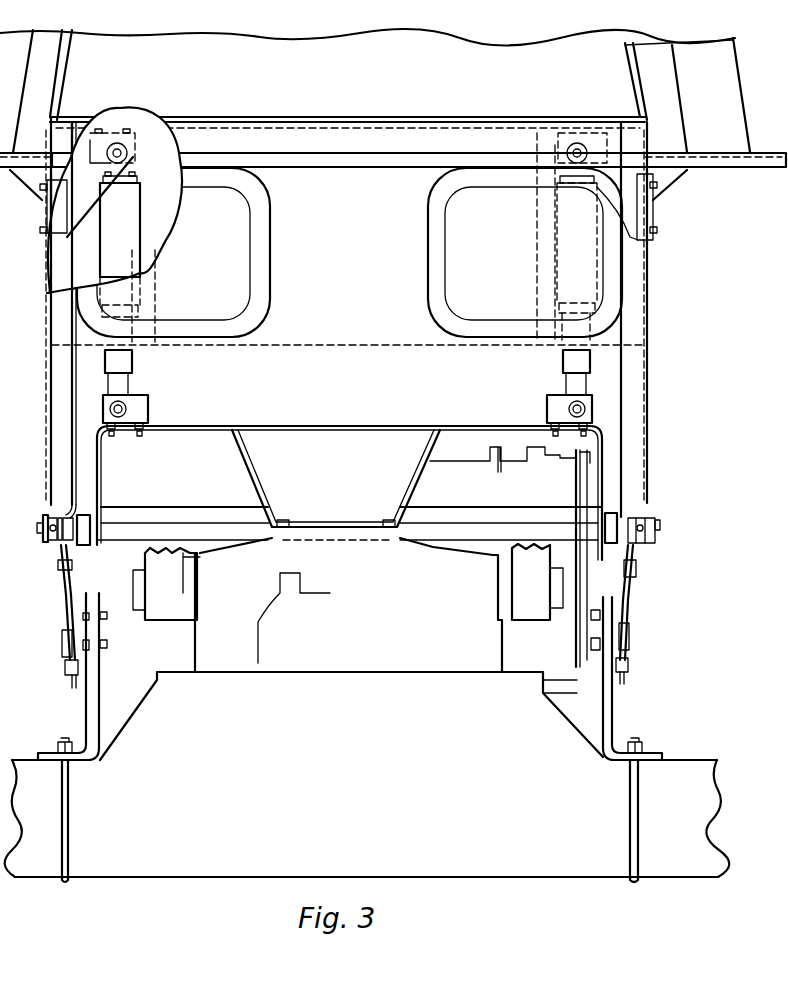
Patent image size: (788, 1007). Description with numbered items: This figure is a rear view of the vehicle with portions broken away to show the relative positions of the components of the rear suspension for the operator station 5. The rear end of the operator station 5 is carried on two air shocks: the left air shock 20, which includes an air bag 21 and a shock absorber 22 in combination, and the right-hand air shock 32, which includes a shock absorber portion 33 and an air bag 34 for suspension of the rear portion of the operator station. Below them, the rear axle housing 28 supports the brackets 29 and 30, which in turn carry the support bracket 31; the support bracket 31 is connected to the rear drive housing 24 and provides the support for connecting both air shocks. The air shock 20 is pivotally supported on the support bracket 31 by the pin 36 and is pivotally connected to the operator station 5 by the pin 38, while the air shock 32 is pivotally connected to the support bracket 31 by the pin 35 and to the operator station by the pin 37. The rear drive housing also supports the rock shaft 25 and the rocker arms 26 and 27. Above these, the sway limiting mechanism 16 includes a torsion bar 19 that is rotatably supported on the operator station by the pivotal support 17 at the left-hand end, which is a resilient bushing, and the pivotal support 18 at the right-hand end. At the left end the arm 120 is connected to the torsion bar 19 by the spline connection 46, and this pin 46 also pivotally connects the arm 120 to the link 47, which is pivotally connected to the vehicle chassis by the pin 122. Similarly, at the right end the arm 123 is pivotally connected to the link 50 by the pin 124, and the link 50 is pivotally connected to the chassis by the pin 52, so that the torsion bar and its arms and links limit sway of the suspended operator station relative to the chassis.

The operator station 5 is at (40, 325).
The sway limiting mechanism 16 is at (382, 549).
The pivotal support 17 is at (55, 551).
The pivotal support 18 is at (643, 551).
The torsion bar 19 is at (200, 530).
The air shock 20 is at (148, 219).
The air bag 21 is at (107, 255).
The shock absorber 22 is at (128, 363).
The rear drive housing 24 is at (436, 547).
The rock shaft 25 is at (141, 607).
The rocker arm 26 is at (160, 548).
The rocker arm 27 is at (531, 556).
The rear axle housing 28 is at (100, 870).
The bracket 29 is at (614, 716).
The bracket 30 is at (99, 693).
The support bracket 31 is at (360, 427).
The air shock 32 is at (544, 254).
The shock absorber portion 33 is at (562, 362).
The air bag 34 is at (562, 285).
The pin 35 is at (555, 411).
The pin 36 is at (150, 405).
The pin 37 is at (578, 142).
The pin 38 is at (117, 142).
The pin 46 is at (63, 512).
The link 47 is at (62, 612).
The link 50 is at (634, 606).
The pin 52 is at (626, 670).
The arm 120 is at (90, 553).
The pin 122 is at (82, 690).
The arm 123 is at (621, 518).
The pin 124 is at (534, 594).